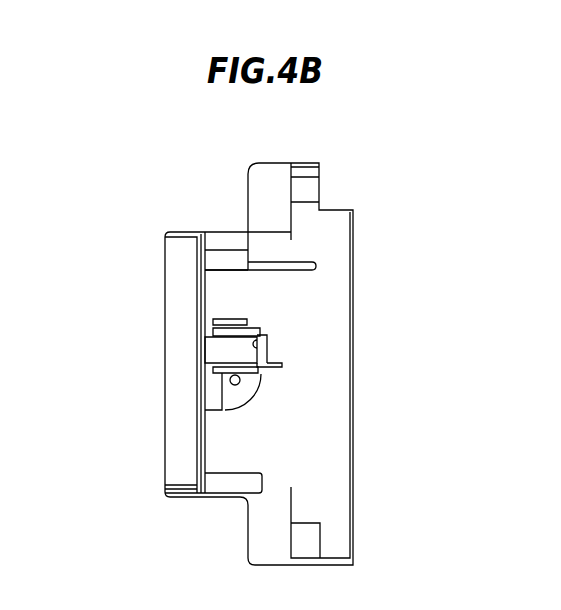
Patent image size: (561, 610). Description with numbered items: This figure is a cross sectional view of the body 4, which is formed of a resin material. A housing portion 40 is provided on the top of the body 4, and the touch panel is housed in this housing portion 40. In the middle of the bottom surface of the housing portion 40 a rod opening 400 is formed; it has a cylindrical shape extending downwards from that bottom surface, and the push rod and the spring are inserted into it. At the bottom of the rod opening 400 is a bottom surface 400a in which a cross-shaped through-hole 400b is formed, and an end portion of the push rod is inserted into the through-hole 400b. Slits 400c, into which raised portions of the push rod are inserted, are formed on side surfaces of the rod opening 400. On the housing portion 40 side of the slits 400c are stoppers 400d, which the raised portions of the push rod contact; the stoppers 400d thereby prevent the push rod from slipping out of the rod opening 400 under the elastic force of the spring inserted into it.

The body 4 is at (394, 165).
The housing portion 40 is at (172, 265).
The rod opening 400 is at (218, 350).
The bottom surface 400a is at (267, 336).
The through-hole 400b is at (268, 356).
The slits 400c is at (222, 333).
The stoppers 400d is at (216, 331).